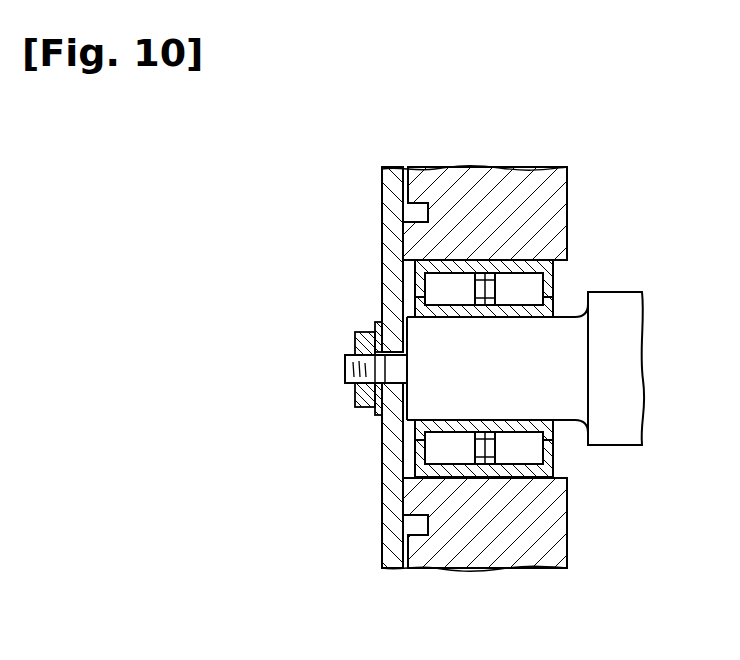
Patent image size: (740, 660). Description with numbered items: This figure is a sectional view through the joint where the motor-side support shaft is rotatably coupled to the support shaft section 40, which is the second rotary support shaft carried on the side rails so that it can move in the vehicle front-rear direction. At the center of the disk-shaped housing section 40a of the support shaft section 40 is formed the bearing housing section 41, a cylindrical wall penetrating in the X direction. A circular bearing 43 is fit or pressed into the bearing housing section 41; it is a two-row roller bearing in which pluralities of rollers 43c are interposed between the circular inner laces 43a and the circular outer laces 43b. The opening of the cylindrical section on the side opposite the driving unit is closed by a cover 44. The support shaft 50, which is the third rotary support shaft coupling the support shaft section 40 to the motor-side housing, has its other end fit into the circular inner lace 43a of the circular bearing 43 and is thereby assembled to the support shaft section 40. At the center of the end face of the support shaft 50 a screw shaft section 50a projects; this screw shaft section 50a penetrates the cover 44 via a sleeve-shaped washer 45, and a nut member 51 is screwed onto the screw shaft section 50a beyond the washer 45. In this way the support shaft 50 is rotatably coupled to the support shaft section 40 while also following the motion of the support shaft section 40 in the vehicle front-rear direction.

The support shaft section 40 is at (477, 322).
The housing section 40a is at (568, 195).
The bearing housing section 41 is at (564, 271).
The circular bearing 43 is at (523, 352).
The circular inner lace 43a is at (440, 305).
The circular outer lace 43b is at (450, 265).
The roller 43c is at (463, 285).
The cover 44 is at (382, 460).
The sleeve-shaped washer 45 is at (375, 322).
The support shaft 50 is at (616, 291).
The screw shaft section 50a is at (347, 375).
The nut member 51 is at (355, 338).